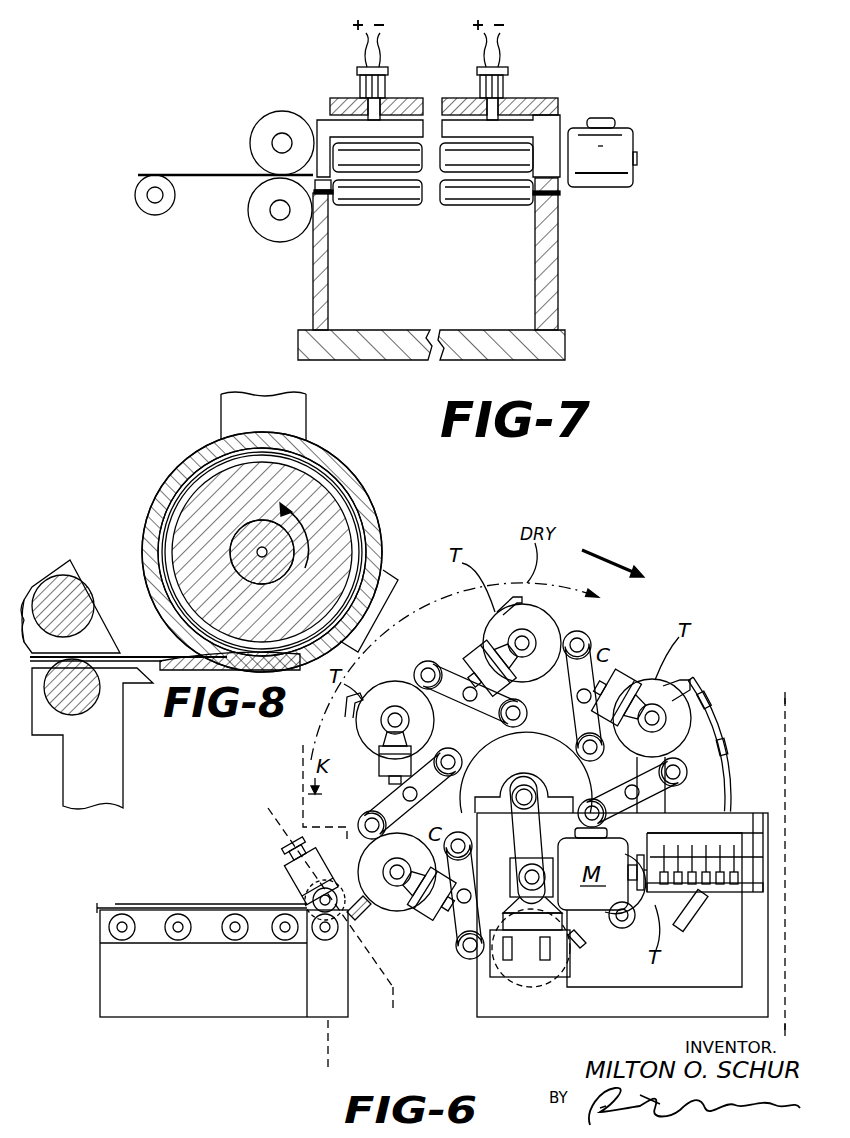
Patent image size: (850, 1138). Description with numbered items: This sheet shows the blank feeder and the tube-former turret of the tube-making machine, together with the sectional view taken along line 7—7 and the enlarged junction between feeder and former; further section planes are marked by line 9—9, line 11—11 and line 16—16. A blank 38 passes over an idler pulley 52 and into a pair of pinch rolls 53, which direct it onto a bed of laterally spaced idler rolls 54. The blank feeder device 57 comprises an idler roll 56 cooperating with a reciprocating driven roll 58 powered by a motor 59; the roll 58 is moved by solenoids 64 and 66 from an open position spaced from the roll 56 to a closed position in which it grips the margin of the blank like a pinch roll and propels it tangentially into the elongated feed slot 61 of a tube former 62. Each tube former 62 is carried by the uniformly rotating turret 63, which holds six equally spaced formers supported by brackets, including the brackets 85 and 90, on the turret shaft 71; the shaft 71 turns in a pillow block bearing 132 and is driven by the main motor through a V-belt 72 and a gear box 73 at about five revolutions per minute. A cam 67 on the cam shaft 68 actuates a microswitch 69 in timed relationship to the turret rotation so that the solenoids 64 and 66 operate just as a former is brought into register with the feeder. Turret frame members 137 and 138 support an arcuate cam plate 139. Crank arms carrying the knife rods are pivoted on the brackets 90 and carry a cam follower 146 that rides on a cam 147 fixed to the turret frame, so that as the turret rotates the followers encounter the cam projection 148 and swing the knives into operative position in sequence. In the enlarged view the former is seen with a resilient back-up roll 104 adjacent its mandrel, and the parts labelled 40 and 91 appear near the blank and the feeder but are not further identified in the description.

In FIG. 6, the section line 7— 7 is at (265, 805).
In FIG. 6, the section line 9— 9 is at (786, 698).
In FIG. 6, the section line 11— 11 is at (398, 724).
In FIG. 6, the section line 16— 16 is at (301, 750).
In FIG. 7, the blank 38 is at (215, 172).
In FIG. 8, the web / sheet 40 is at (150, 655).
In FIG. 6, the web / sheet 40 is at (178, 905).
In FIG. 7, the idler pulley 52 is at (158, 215).
In FIG. 7, the pinch rolls 53 is at (283, 113).
In FIG. 6, the idler rolls 54 is at (121, 940).
In FIG. 7, the idler roll 56 is at (376, 203).
In FIG. 8, the idler roll 56 is at (80, 710).
In FIG. 6, the idler roll 56 is at (326, 940).
In FIG. 8, the blank feeder device 57 is at (132, 714).
In FIG. 6, the blank feeder device 57 is at (285, 862).
In FIG. 7, the reciprocating roll 58 is at (348, 147).
In FIG. 8, the reciprocating roll 58 is at (78, 578).
In FIG. 6, the reciprocating roll 58 is at (304, 894).
In FIG. 7, the motor 59 is at (603, 187).
In FIG. 8, the feed slot 61 is at (163, 648).
In FIG. 8, the tube former 62 is at (158, 503).
In FIG. 6, the tube former 62 is at (410, 908).
In FIG. 6, the turret 63 is at (504, 572).
In FIG. 7, the solenoid 64 is at (360, 85).
In FIG. 7, the solenoid 66 is at (505, 90).
In FIG. 6, the cam 67 is at (665, 846).
In FIG. 6, the cam shaft 68 is at (761, 813).
In FIG. 6, the microswitch 69 is at (663, 887).
In FIG. 6, the turret shaft 71 is at (525, 785).
In FIG. 6, the V-belt 72 is at (513, 836).
In FIG. 6, the gear box 73 is at (511, 886).
In FIG. 6, the bracket 85 is at (463, 668).
In FIG. 6, the turret bracket 90 is at (482, 735).
In FIG. 6, the electrode stem 91 is at (487, 680).
In FIG. 8, the back-up roll 104 is at (213, 472).
In FIG. 6, the pillow block bearing 132 is at (503, 790).
In FIG. 6, the turret frame member 137 is at (728, 736).
In FIG. 6, the turret frame member 138 is at (706, 893).
In FIG. 6, the arcuate cam plate 139 is at (705, 700).
In FIG. 6, the cam follower 146 is at (520, 712).
In FIG. 6, the cam 147 is at (572, 774).
In FIG. 6, the cam projection 148 is at (594, 782).